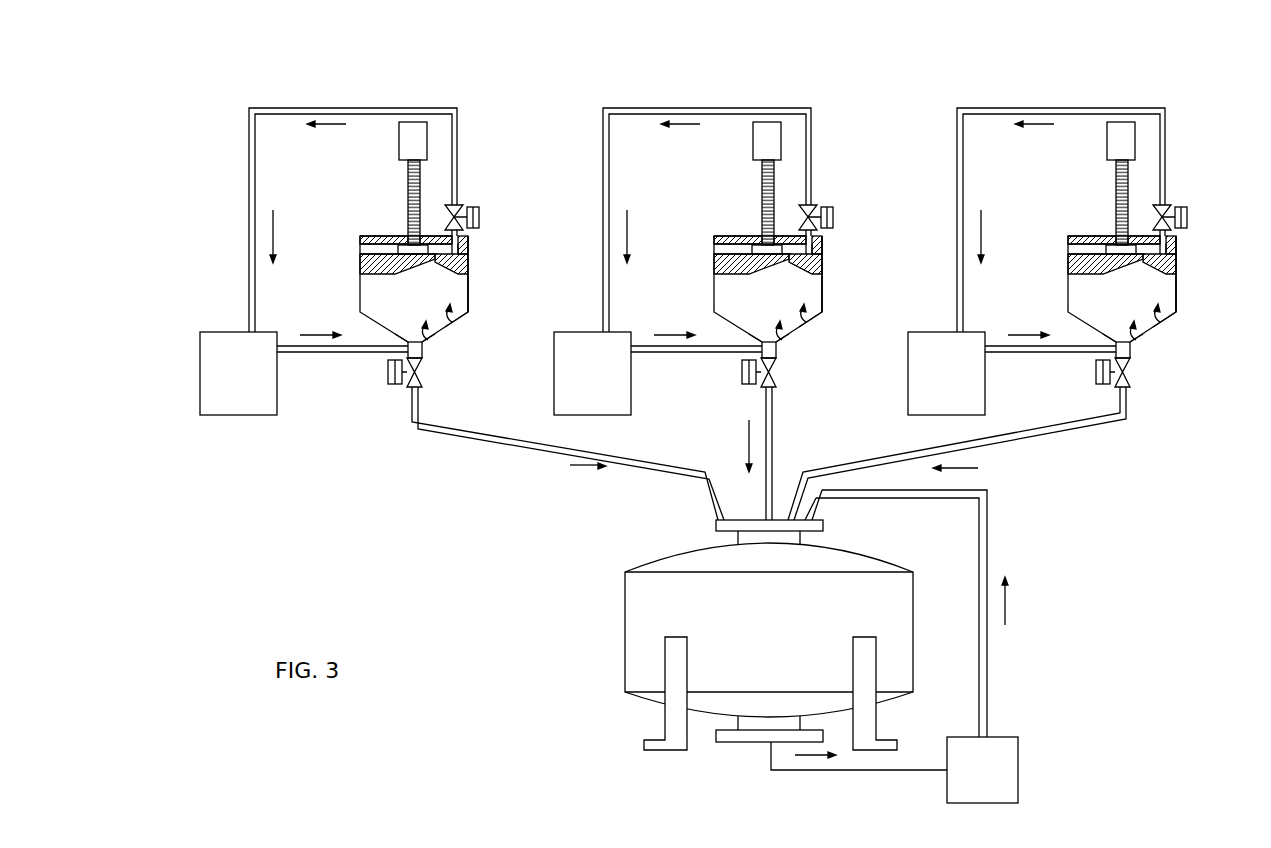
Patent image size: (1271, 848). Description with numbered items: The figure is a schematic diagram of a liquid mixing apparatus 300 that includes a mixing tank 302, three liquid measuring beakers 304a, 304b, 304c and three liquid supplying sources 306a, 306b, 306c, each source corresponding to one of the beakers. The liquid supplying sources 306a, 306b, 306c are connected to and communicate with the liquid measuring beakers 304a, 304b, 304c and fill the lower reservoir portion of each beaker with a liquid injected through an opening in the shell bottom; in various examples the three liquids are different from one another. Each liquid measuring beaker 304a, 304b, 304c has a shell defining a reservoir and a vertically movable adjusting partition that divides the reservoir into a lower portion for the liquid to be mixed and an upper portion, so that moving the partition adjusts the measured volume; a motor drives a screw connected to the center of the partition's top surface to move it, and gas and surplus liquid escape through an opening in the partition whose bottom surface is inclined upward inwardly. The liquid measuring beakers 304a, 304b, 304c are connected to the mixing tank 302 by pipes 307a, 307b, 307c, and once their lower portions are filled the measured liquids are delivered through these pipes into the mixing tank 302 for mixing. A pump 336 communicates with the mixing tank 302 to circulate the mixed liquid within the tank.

The liquid mixing apparatus 300 is at (213, 98).
The mixing tank 302 is at (625, 636).
The liquid measuring beaker 304a is at (377, 219).
The liquid measuring beaker 304b is at (731, 219).
The liquid measuring beaker 304c is at (1085, 219).
The liquid supplying source 306a is at (266, 385).
The liquid supplying source 306b is at (592, 373).
The liquid supplying source 306c is at (946, 373).
The pipe 307a is at (510, 447).
The pipe 307b is at (773, 447).
The pipe 307c is at (1020, 444).
The pump 336 is at (1020, 770).